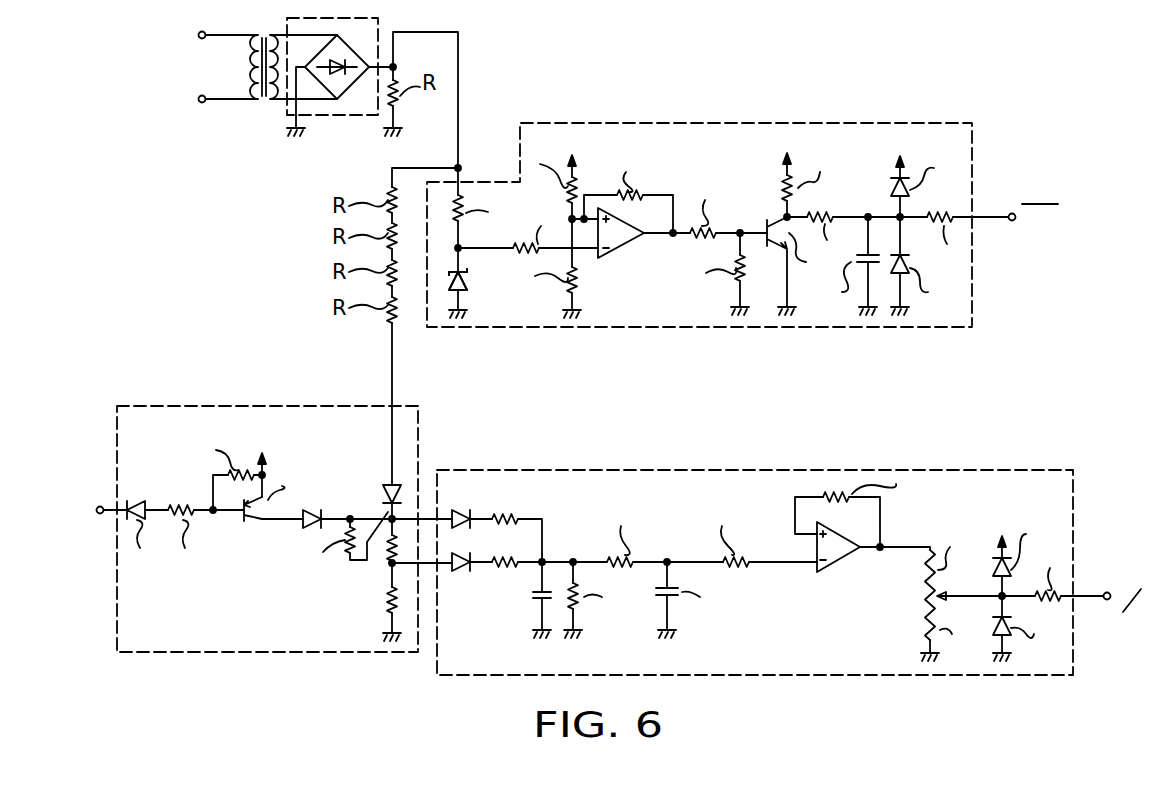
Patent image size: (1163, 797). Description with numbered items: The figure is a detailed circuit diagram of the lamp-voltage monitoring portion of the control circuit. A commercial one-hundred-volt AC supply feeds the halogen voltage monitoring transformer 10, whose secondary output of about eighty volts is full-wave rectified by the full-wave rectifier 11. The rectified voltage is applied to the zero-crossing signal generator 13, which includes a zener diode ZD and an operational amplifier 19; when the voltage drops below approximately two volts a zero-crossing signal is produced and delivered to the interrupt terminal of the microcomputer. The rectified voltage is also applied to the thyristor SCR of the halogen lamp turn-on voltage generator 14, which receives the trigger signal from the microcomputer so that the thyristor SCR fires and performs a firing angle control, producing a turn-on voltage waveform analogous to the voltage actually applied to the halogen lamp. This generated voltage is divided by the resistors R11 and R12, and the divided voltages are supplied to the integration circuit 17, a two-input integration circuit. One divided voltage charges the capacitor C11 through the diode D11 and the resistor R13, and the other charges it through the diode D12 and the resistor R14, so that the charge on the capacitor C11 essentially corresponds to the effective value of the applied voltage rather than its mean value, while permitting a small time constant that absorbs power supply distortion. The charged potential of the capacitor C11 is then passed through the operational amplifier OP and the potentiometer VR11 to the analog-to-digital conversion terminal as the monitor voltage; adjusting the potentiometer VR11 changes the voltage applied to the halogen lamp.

The halogen voltage monitoring transformer 10 is at (260, 105).
The full-wave rectifier 11 is at (336, 115).
The zero-crossing signal generator 13 is at (834, 122).
The halogen lamp turn-on voltage generator 14 is at (222, 406).
The integration circuit 17 is at (938, 468).
The operational amplifier 19 is at (627, 250).
The zener diode ZD is at (468, 280).
The thyristor SCR is at (385, 492).
The resistor R11 is at (388, 548).
The resistor R12 is at (388, 598).
The resistor R13 is at (520, 512).
The resistor R14 is at (500, 568).
The diode D11 is at (462, 510).
The diode D12 is at (463, 572).
The capacitor C11 is at (532, 598).
The operational amplifier OP is at (835, 566).
The potentiometer VR11 is at (925, 591).